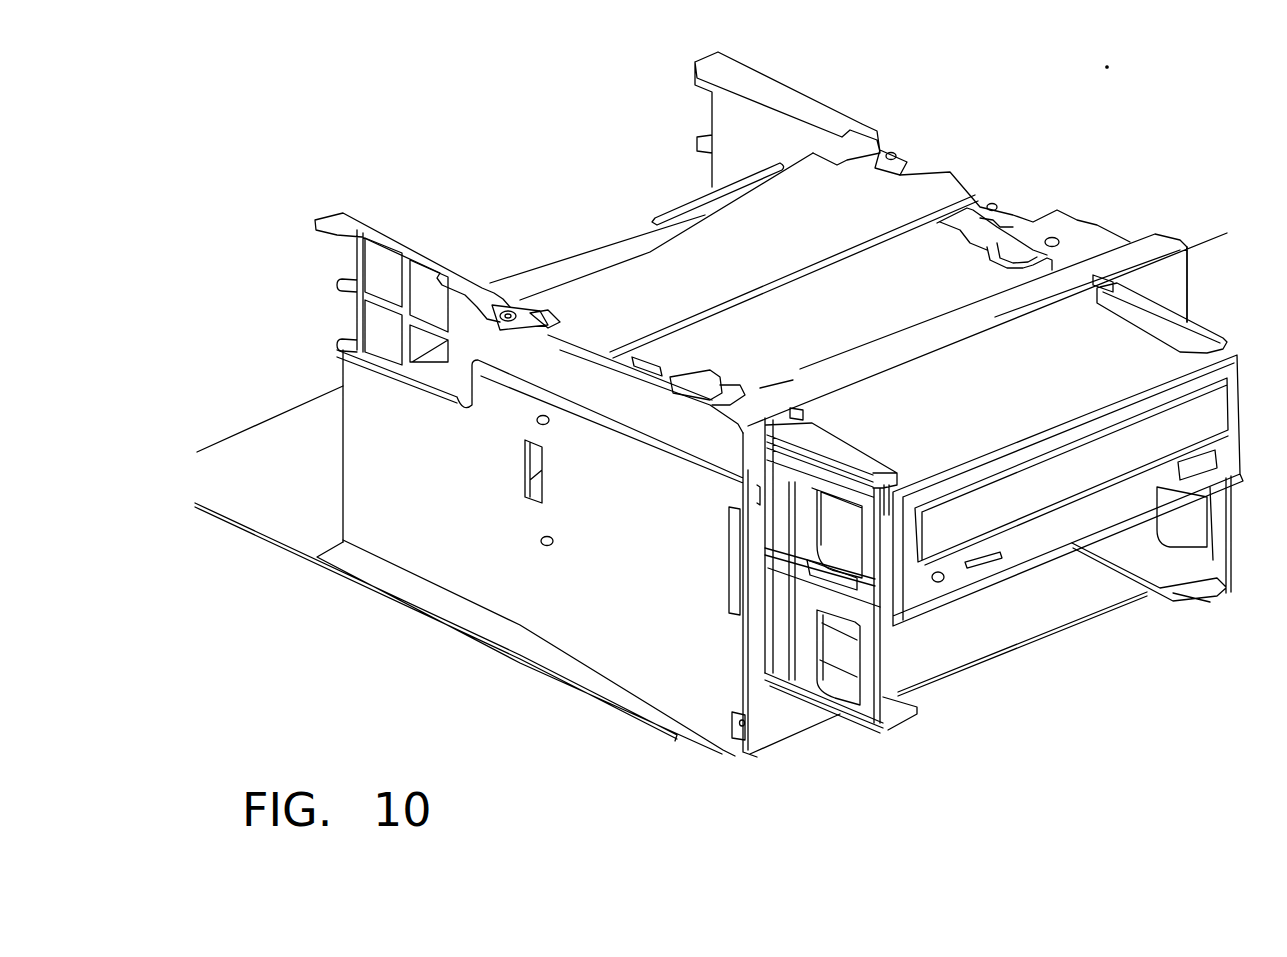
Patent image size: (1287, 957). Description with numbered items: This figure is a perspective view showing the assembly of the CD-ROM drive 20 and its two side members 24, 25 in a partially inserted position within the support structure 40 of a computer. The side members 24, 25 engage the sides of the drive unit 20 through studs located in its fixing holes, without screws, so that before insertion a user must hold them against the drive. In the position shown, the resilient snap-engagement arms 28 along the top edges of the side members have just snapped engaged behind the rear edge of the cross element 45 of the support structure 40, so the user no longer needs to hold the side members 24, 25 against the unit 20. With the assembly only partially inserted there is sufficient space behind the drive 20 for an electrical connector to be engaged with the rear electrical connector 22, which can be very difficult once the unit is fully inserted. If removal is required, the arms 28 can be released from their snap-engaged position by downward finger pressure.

The CD-ROM drive 20 is at (1015, 406).
The rear electrical connector 22 is at (688, 203).
The side member 24 is at (862, 698).
The side member 25 is at (1213, 570).
The resilient arm 28 is at (1050, 268).
The support structure 40 is at (960, 160).
The cross element 45 is at (907, 343).